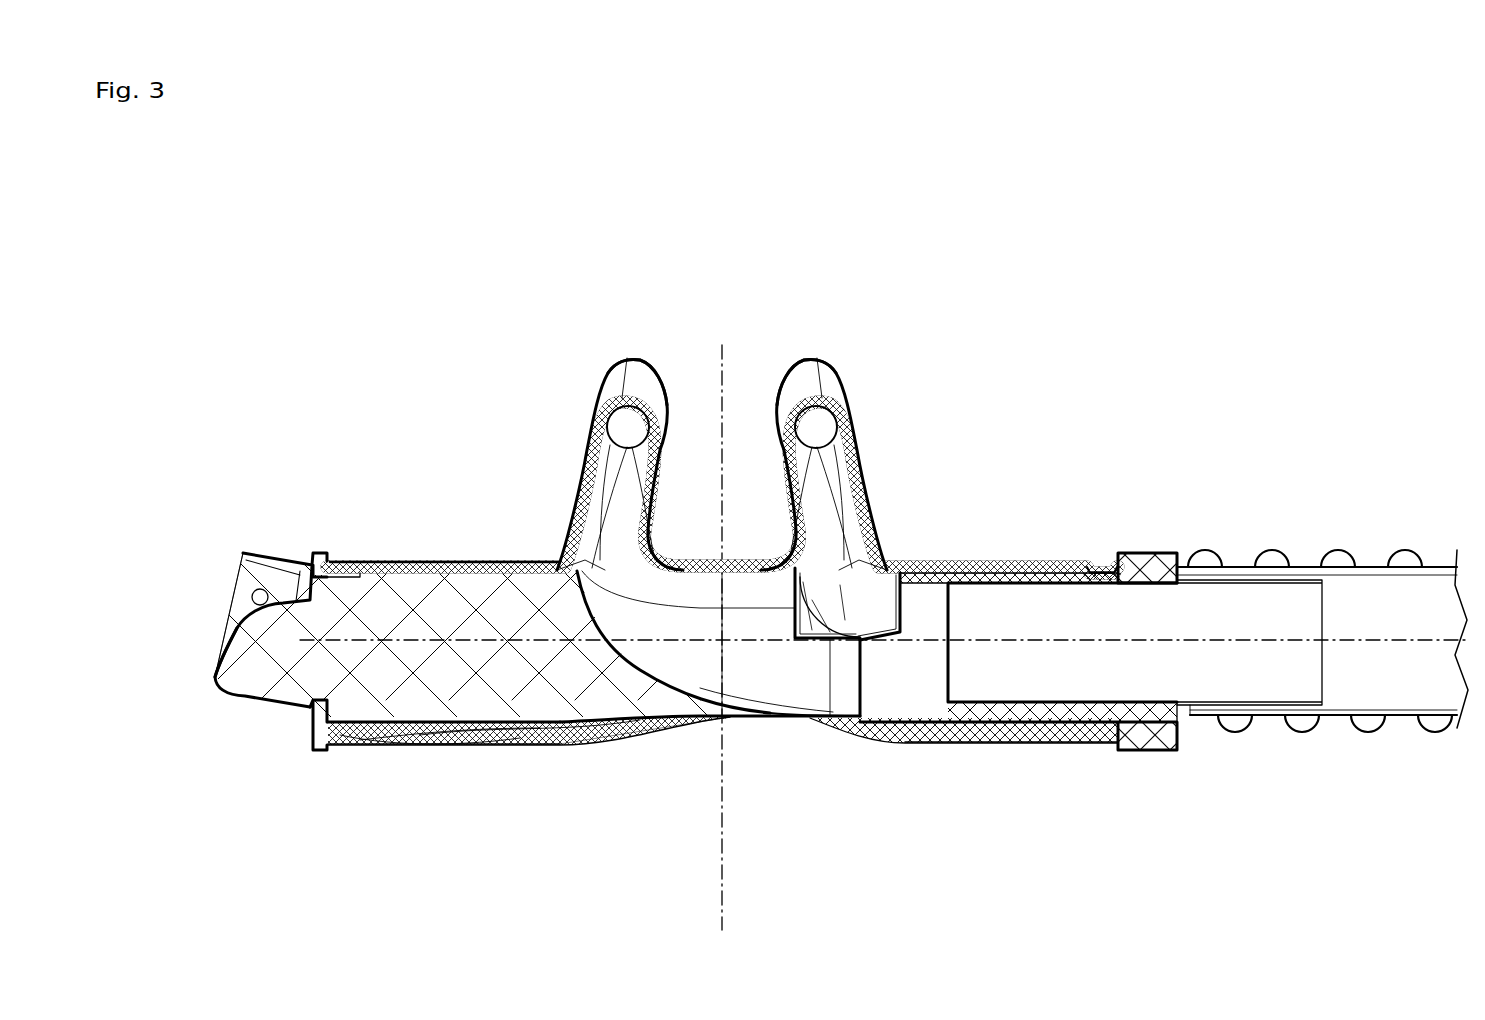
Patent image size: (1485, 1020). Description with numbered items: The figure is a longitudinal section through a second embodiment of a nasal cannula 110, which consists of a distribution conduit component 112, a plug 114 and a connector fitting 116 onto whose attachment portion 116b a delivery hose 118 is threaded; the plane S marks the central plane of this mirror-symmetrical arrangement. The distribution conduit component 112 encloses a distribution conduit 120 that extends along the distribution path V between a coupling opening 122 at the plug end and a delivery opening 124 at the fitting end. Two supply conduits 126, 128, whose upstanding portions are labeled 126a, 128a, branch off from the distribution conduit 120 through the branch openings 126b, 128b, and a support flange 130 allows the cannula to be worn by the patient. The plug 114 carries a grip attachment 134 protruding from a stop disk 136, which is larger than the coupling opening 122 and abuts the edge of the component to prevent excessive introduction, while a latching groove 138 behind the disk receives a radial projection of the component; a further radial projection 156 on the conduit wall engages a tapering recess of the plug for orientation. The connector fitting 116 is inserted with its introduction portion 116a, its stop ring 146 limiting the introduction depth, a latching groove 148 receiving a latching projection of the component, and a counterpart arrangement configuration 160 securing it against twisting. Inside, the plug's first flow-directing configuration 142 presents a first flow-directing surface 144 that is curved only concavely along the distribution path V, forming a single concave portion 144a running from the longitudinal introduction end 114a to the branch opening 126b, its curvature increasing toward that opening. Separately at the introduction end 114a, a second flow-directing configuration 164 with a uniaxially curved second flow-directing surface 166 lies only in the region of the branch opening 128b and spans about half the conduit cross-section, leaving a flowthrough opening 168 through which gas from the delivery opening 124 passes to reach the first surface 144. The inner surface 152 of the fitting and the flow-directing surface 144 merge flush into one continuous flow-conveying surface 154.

The nasal cannula 110 is at (340, 343).
The distribution conduit component 112 is at (660, 775).
The plug 114 is at (290, 775).
The longitudinal introduction end 114a is at (848, 735).
The connector fitting 116 is at (1118, 775).
The introduction portion 116a is at (980, 553).
The attachment portion 116b is at (1253, 732).
The delivery hose 118 is at (1418, 748).
The distribution conduit 120 is at (767, 600).
The coupling opening 122 is at (323, 663).
The delivery opening 124 is at (1124, 663).
The supply conduit 126 is at (597, 400).
The apex of first loop 126a is at (653, 352).
The branch opening 126b is at (603, 557).
The supply conduit 128 is at (842, 388).
The apex of second loop 128a is at (785, 352).
The branch opening 128b is at (842, 557).
The support flange 130 is at (220, 566).
The grip attachment 134 is at (240, 677).
The stop disk 136 is at (318, 553).
The latching groove 138 is at (345, 563).
The first flow-directing configuration 142 is at (457, 592).
The first flow-directing surface 144 is at (713, 687).
The concave surface portion 144a is at (743, 697).
The stop ring 146 is at (1147, 565).
The latching groove 148 is at (1112, 553).
The inner surface 152 is at (1067, 704).
The continuous flow-conveying surface 154 is at (875, 685).
The radial projection 156 is at (360, 737).
The counterpart arrangement configuration 160 is at (1087, 737).
The second flow-directing configuration 164 is at (798, 616).
The second flow-directing surface 166 is at (828, 615).
The flowthrough opening 168 is at (846, 667).
The plane of symmetry S is at (722, 383).
The distribution path V is at (1025, 640).